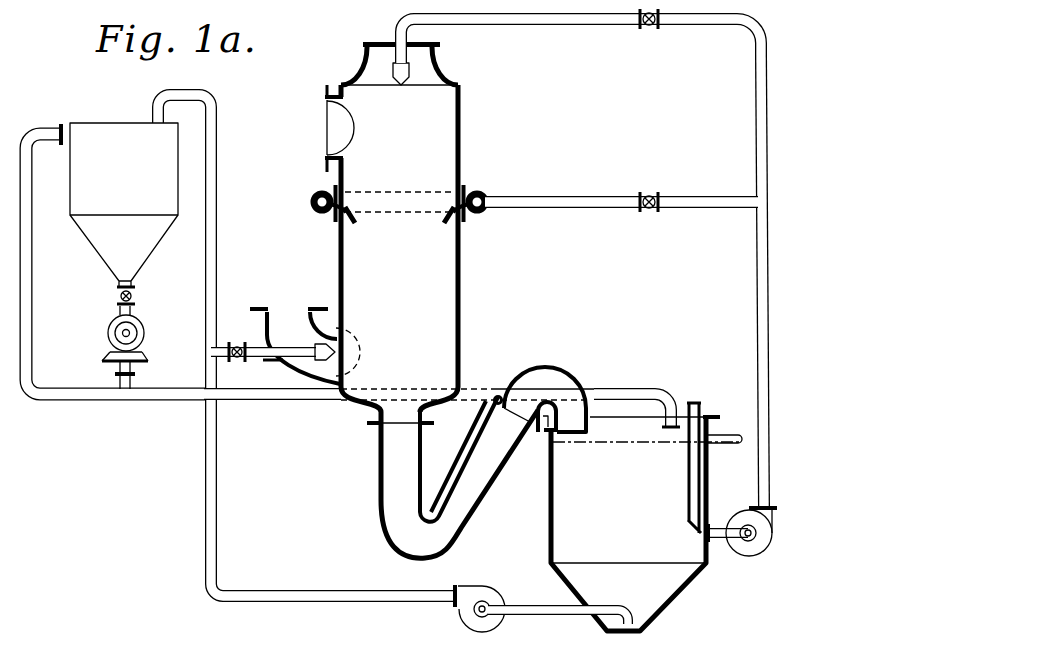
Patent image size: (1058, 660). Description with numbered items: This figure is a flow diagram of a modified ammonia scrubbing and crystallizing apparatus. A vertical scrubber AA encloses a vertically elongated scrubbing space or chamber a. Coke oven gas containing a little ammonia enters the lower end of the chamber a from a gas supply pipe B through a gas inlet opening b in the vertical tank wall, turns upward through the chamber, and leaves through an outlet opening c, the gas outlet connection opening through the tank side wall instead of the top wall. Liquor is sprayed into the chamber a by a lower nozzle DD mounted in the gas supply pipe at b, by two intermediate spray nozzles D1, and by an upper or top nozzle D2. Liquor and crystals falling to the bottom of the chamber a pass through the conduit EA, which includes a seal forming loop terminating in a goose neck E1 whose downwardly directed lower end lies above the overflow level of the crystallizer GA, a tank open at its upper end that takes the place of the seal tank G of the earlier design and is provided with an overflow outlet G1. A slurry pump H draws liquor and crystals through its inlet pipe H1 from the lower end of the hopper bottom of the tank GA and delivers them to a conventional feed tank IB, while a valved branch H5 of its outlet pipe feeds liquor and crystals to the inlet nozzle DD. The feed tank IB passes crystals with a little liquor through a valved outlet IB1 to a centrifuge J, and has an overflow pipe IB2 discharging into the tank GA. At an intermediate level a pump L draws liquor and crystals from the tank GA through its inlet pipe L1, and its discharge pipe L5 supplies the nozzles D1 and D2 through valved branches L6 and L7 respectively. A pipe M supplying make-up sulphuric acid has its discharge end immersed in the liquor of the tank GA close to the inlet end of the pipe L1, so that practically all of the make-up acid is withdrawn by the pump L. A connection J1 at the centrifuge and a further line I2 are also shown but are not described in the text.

The feed tank IB is at (100, 122).
The valved outlet IB1 is at (133, 308).
The overflow pipe IB2 is at (33, 257).
The centrifuge J is at (147, 337).
The pump discharge pipe J1 is at (134, 385).
The feed pipe to vessel I2 is at (299, 400).
The tank G is at (322, 112).
The outlet opening c is at (335, 125).
The top nozzle D2 is at (409, 72).
The intermediate spray nozzles D1 is at (450, 207).
The valved pipe branch L7 is at (573, 26).
The valved pipe branch L6 is at (592, 209).
The discharge pipe L5 is at (758, 367).
The scrubber AA is at (463, 302).
The scrubbing space a is at (410, 307).
The gas inlet opening b is at (352, 351).
The gas supply pipe B is at (265, 307).
The lower nozzle DD is at (320, 326).
The valved branch H5 is at (252, 359).
The conduit EA is at (423, 466).
The goose neck E1 is at (573, 376).
The crystallizer GA is at (548, 483).
The make-up acid pipe M is at (688, 467).
The overflow outlet G1 is at (722, 445).
The pump L is at (762, 556).
The inlet pipe L1 is at (741, 542).
The slurry pump H is at (490, 585).
The inlet pipe H1 is at (537, 617).